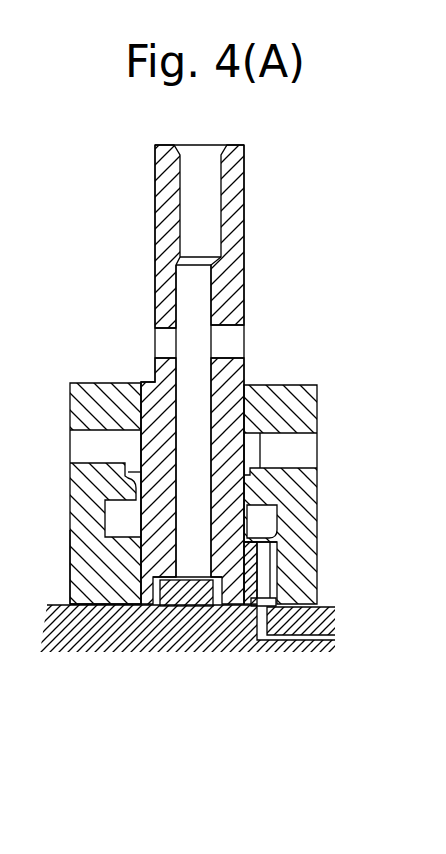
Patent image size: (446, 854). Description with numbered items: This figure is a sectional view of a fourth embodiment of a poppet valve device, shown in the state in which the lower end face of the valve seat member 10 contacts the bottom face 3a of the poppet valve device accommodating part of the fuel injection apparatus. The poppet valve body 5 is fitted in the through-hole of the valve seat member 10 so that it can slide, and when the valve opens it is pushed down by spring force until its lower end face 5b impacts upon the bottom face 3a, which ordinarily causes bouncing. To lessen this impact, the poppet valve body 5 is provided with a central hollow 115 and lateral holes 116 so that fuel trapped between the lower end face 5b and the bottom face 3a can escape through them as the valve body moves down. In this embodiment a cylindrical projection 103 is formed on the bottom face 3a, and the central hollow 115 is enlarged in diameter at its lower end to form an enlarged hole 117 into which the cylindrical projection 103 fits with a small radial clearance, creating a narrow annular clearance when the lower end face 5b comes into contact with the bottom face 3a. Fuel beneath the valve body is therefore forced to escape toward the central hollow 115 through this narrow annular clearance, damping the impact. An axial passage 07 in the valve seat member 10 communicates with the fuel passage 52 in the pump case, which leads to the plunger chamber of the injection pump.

The poppet valve body 5 is at (232, 288).
The central hollow 115 is at (188, 298).
The lateral holes 116 is at (162, 341).
The valve seat member 10 is at (292, 407).
The bottom face of the poppet valve device accommodating part 3a is at (94, 603).
The axial passage 07 is at (262, 570).
The enlarged hole 117 is at (222, 580).
The cylindrical projection 103 is at (178, 607).
The lower end face of the poppet valve body 5b is at (140, 607).
The fuel passage 52 is at (303, 640).